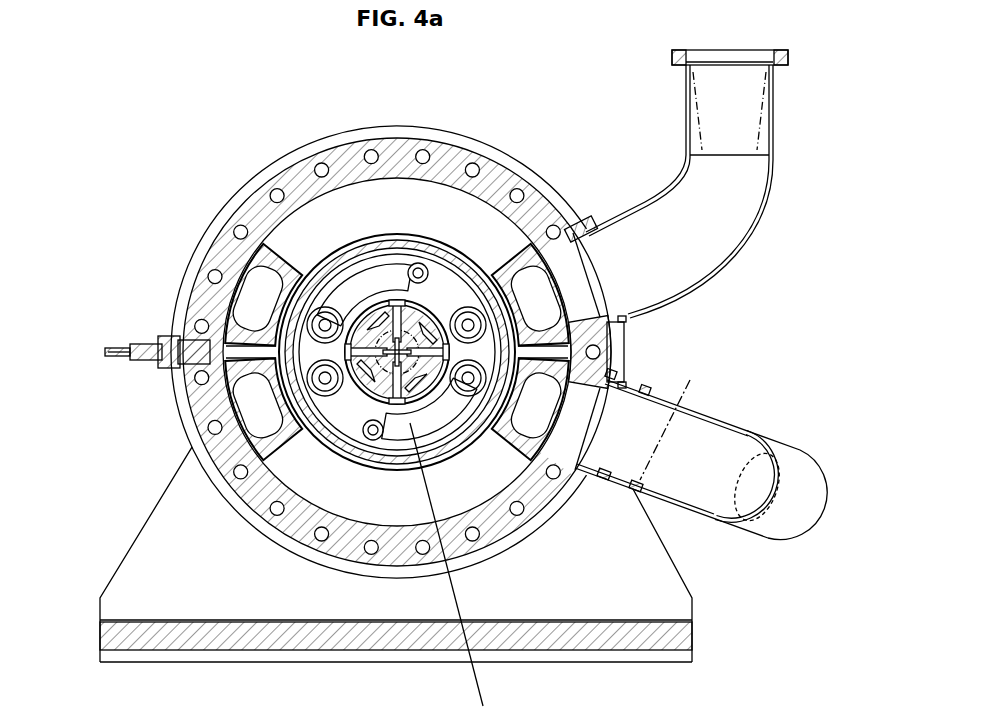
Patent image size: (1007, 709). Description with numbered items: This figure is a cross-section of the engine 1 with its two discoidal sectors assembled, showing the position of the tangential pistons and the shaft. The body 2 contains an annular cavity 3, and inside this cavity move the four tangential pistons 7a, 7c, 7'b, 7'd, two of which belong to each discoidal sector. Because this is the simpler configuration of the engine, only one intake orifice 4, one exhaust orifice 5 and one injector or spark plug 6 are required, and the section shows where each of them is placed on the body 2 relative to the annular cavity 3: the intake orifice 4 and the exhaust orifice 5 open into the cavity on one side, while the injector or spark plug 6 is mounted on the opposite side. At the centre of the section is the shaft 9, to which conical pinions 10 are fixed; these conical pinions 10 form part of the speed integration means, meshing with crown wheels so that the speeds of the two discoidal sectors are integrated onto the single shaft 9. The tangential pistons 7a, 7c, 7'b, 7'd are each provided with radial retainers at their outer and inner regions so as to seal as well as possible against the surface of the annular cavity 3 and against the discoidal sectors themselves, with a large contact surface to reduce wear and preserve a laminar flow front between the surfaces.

The engine 1 is at (150, 109).
The body 2 is at (206, 402).
The annular cavity 3 is at (313, 222).
The intake orifice 4 is at (688, 240).
The exhaust orifice 5 is at (690, 444).
The injector or spark plug 6 is at (158, 338).
The tangential piston 7a is at (263, 409).
The tangential piston 7'b is at (530, 409).
The tangential piston 7c is at (530, 295).
The tangential piston 7'd is at (263, 295).
The shaft 9 is at (383, 300).
The conical pinions 10 is at (437, 335).